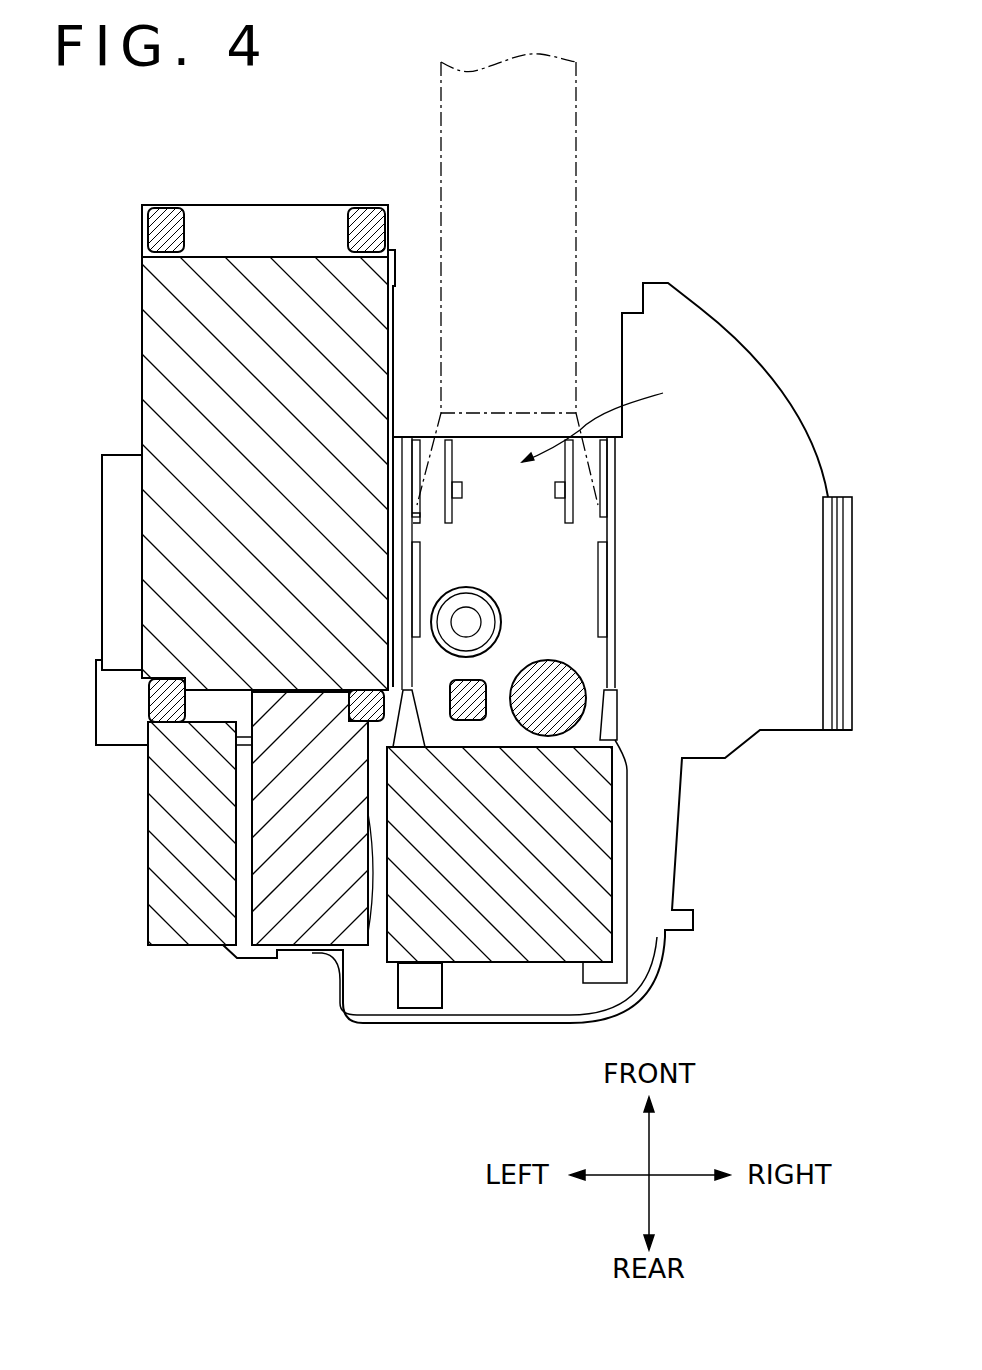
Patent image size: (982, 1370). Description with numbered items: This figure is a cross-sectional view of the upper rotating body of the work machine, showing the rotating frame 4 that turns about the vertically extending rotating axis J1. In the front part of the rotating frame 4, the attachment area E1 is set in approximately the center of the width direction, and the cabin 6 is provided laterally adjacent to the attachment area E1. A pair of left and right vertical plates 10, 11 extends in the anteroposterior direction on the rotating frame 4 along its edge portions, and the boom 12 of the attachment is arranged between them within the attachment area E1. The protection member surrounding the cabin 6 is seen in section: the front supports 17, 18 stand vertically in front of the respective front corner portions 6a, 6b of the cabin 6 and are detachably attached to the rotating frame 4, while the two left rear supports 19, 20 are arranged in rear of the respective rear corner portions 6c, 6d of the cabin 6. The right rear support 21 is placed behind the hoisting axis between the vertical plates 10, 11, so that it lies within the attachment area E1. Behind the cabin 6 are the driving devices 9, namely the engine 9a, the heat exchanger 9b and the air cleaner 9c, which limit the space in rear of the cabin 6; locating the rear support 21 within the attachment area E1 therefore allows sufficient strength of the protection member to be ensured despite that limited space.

The rotating frame 4 is at (717, 335).
The cabin 6 is at (158, 396).
The front corner portion 6a is at (163, 309).
The front corner portion 6b is at (400, 277).
The rear corner portion 6c is at (162, 668).
The rear corner portion 6d is at (380, 668).
The driving devices 9 is at (448, 1097).
The engine 9a is at (468, 952).
The heat exchanger 9b is at (308, 930).
The air cleaner 9c is at (197, 933).
The vertical plate 10 is at (412, 552).
The vertical plate 11 is at (600, 552).
The boom 12 is at (576, 175).
The front support 17 is at (166, 215).
The front support 18 is at (362, 210).
The rear support 19 is at (162, 700).
The rear support 20 is at (357, 723).
The rear support 21 is at (468, 715).
The rotating axis J1 is at (470, 620).
The attachment area E1 is at (600, 414).